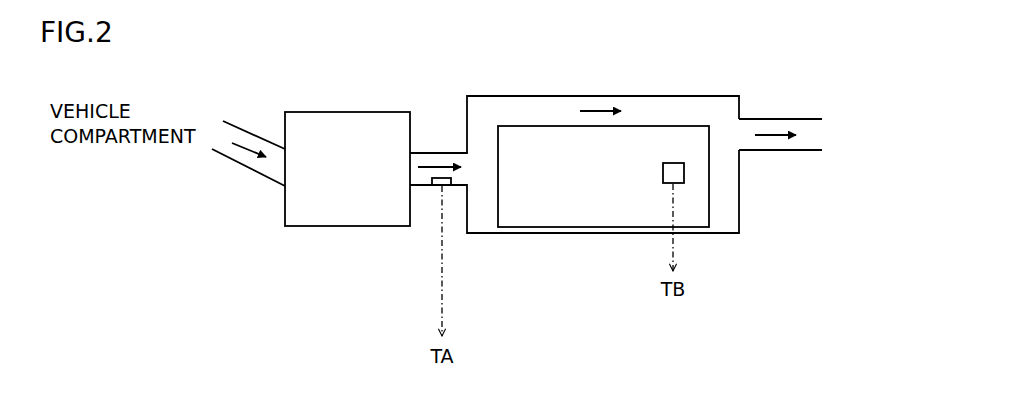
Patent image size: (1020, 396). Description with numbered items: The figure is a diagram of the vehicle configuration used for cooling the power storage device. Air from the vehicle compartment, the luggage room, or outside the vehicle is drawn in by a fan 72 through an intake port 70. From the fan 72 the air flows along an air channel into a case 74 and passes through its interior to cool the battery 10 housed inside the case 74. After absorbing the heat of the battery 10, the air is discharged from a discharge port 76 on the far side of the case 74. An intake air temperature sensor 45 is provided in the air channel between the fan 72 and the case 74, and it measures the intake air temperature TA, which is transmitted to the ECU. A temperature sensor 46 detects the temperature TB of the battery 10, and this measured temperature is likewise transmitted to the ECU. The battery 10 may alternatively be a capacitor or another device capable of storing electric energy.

The intake port 70 is at (216, 115).
The fan 72 is at (347, 112).
The case 74 is at (551, 96).
The discharge port 76 is at (829, 127).
The battery 10 is at (498, 217).
The temperature sensor 46 is at (669, 163).
The intake air temperature sensor 45 is at (437, 186).